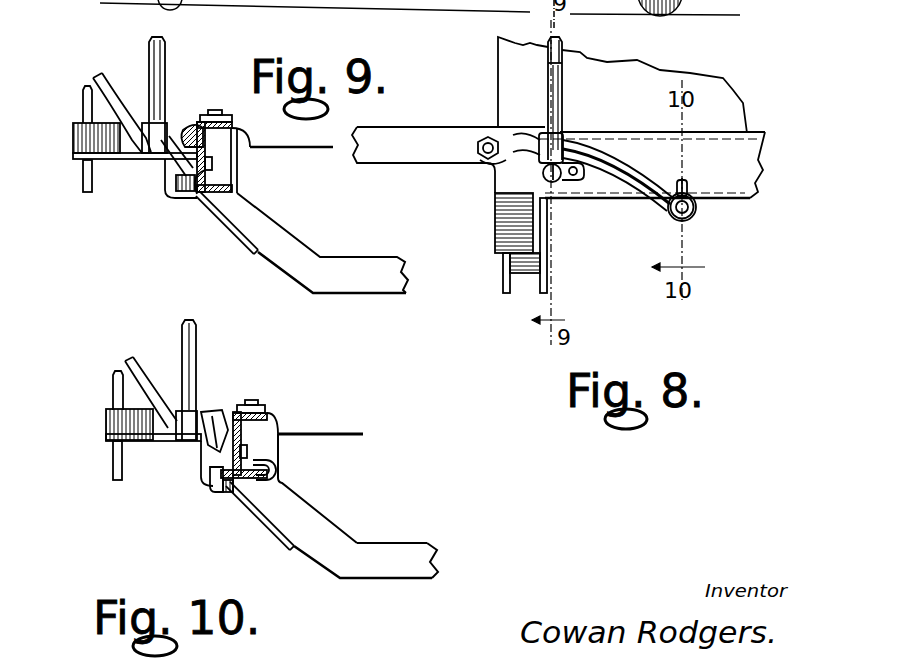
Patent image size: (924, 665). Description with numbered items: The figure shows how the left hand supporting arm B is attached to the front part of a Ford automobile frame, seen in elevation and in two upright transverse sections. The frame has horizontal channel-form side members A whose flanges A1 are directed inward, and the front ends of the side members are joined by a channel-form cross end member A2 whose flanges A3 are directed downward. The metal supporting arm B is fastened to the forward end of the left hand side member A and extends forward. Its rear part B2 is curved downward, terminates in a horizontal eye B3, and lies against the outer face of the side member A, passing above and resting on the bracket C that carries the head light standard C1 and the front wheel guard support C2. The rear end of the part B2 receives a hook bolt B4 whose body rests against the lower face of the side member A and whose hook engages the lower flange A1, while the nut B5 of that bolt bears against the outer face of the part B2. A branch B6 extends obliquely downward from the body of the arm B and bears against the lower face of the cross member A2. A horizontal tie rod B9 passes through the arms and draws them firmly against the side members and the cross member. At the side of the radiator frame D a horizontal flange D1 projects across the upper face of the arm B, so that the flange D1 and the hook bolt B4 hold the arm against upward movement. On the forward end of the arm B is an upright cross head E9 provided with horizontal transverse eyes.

In FIG. 8, the frame side member A is at (748, 180).
In FIG. 10, the frame side member A is at (245, 436).
In FIG. 9, the flange of side member A1 is at (246, 146).
In FIG. 10, the flange of side member A1 is at (262, 410).
In FIG. 9, the cross end member A2 is at (366, 265).
In FIG. 8, the cross end member A2 is at (530, 277).
In FIG. 10, the cross end member A2 is at (434, 577).
In FIG. 8, the flange of cross member A3 is at (505, 285).
In FIG. 10, the flange of cross member A3 is at (430, 524).
In FIG. 9, the supporting arm B is at (119, 162).
In FIG. 8, the supporting arm B is at (388, 142).
In FIG. 10, the supporting arm B is at (153, 436).
In FIG. 8, the rear part of arm B2 is at (612, 165).
In FIG. 10, the rear part of arm B2 is at (229, 412).
In FIG. 9, the horizontal eye B3 is at (176, 197).
In FIG. 8, the horizontal eye B3 is at (695, 216).
In FIG. 10, the horizontal eye B3 is at (222, 496).
In FIG. 8, the hook bolt B4 is at (675, 217).
In FIG. 10, the hook bolt B4 is at (278, 476).
In FIG. 8, the nut B5 is at (670, 213).
In FIG. 10, the nut B5 is at (218, 492).
In FIG. 9, the branch B6 is at (240, 243).
In FIG. 8, the branch B6 is at (515, 230).
In FIG. 10, the branch B6 is at (282, 542).
In FIG. 8, the tie rod B9 is at (480, 160).
In FIG. 9, the bracket C is at (169, 164).
In FIG. 8, the bracket C is at (553, 181).
In FIG. 10, the bracket C is at (220, 445).
In FIG. 9, the head light standard C1 is at (149, 52).
In FIG. 8, the head light standard C1 is at (548, 46).
In FIG. 10, the head light standard C1 is at (182, 332).
In FIG. 9, the front wheel guard support C2 is at (149, 83).
In FIG. 8, the front wheel guard support C2 is at (550, 80).
In FIG. 10, the front wheel guard support C2 is at (148, 361).
In FIG. 8, the radiator frame D is at (515, 105).
In FIG. 10, the radiator frame D is at (331, 433).
In FIG. 8, the horizontal flange D1 is at (498, 120).
In FIG. 10, the horizontal flange D1 is at (243, 402).
In FIG. 9, the upright cross head E9 is at (83, 175).
In FIG. 10, the upright cross head E9 is at (112, 462).